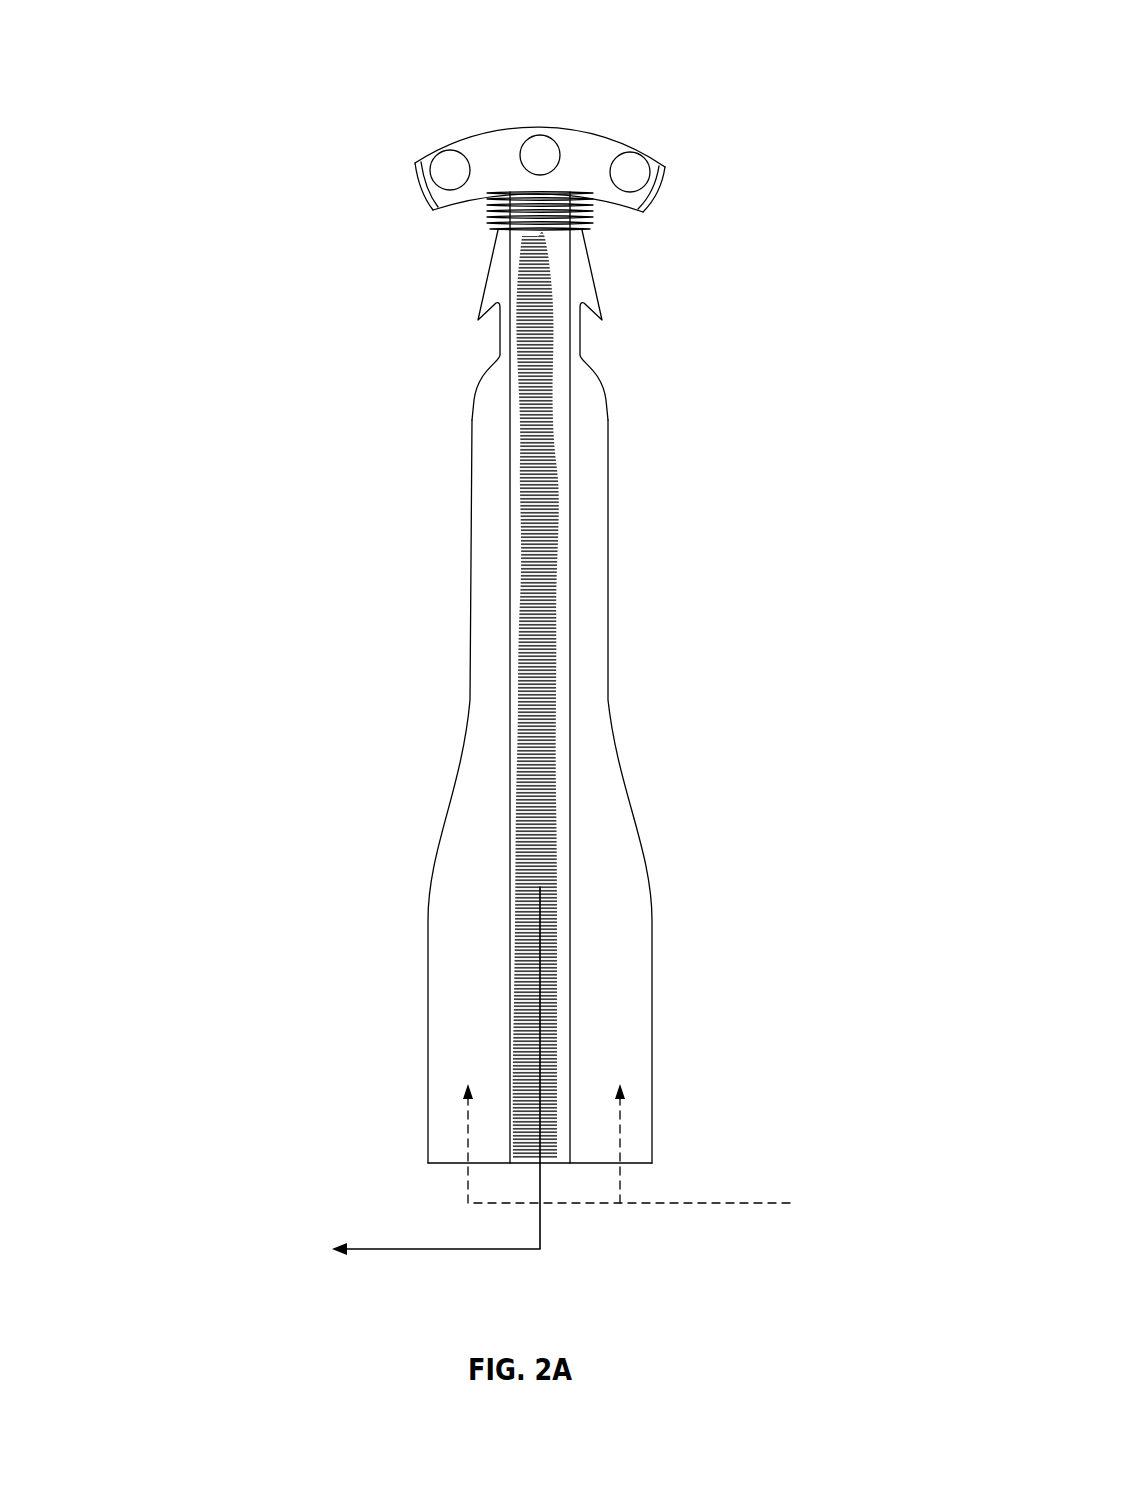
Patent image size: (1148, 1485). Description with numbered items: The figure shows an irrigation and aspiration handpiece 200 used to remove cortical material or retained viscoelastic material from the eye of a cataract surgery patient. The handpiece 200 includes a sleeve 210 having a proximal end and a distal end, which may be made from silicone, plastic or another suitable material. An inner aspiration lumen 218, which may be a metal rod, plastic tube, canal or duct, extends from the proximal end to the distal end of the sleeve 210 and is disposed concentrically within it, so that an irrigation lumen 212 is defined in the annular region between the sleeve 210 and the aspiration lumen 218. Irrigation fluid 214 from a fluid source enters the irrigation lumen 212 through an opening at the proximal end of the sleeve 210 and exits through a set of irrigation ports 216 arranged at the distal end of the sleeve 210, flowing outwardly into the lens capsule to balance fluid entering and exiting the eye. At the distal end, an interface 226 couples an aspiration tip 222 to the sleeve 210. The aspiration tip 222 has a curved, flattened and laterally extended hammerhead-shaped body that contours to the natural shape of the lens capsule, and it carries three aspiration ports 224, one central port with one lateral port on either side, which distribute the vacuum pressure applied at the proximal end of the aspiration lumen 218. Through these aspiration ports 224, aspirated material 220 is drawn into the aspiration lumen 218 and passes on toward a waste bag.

The irrigation and aspiration handpiece 200 is at (190, 51).
The sleeve 210 is at (608, 650).
The irrigation lumen 212 is at (643, 985).
The irrigation fluid 214 is at (757, 1203).
The irrigation ports 216 is at (500, 344).
The aspiration lumen 218 is at (518, 1023).
The aspirated material 220 is at (362, 1247).
The aspiration tip 222 is at (415, 197).
The aspiration ports 224 is at (541, 141).
The interface 226 is at (585, 225).